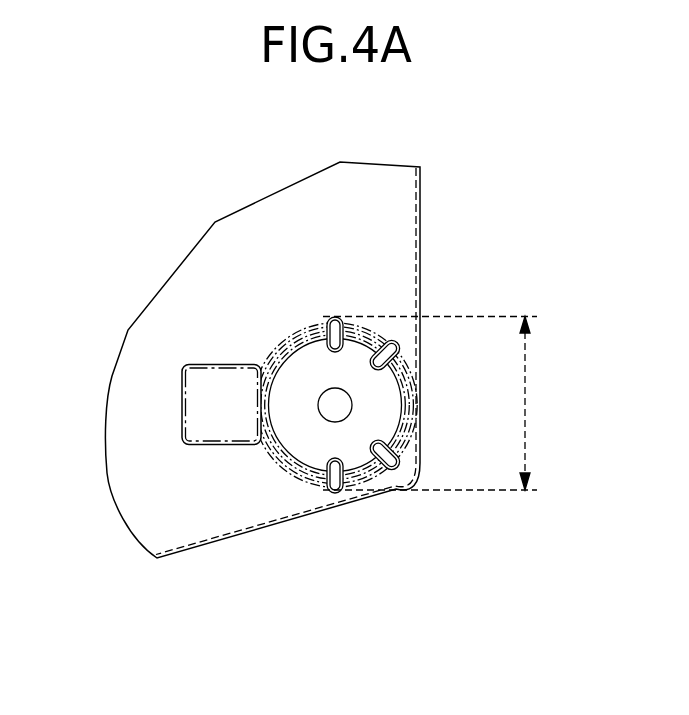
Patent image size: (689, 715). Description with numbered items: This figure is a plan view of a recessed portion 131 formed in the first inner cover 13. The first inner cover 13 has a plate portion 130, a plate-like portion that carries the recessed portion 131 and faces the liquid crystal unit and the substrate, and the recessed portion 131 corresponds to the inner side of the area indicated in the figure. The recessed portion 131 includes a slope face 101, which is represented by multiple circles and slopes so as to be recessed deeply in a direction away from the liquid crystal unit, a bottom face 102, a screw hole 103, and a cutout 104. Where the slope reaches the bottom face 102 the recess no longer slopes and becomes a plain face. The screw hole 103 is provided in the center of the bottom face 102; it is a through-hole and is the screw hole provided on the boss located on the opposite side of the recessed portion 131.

The first inner cover 13 is at (81, 226).
The slope face 101 is at (287, 337).
The bottom face 102 is at (305, 440).
The screw hole 103 is at (345, 402).
The cutout 104 is at (397, 350).
The plate portion 130 is at (392, 248).
The recessed portion 131 is at (445, 404).